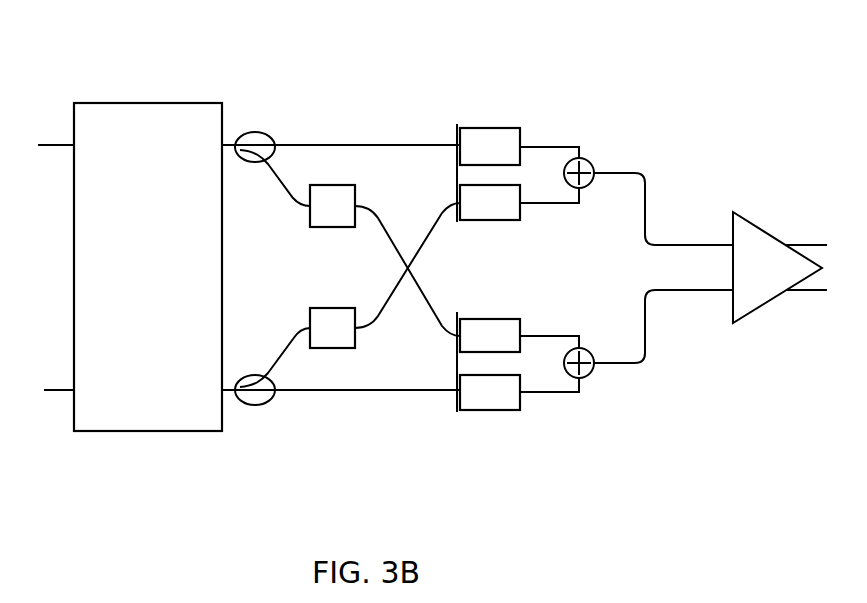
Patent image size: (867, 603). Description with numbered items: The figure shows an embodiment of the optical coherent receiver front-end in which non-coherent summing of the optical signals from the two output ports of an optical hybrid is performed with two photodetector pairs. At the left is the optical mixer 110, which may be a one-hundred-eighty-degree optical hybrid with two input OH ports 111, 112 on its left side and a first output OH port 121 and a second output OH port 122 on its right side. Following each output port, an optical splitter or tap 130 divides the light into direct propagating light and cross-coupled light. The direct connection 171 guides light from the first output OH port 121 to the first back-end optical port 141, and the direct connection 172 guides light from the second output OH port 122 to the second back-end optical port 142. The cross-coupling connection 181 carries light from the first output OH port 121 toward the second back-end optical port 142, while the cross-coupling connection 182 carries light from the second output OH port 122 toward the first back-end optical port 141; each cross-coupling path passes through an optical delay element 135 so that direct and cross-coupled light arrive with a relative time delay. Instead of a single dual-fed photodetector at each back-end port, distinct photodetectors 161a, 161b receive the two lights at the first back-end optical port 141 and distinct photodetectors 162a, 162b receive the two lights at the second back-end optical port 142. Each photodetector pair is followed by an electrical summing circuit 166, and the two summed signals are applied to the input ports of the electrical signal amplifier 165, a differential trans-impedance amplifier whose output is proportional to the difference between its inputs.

The optical mixer 110 is at (140, 103).
The input OH port 111 is at (66, 150).
The input OH port 112 is at (74, 385).
The first output OH port 121 is at (227, 145).
The second output OH port 122 is at (227, 395).
The optical path / waveguide 130 is at (270, 138).
The delay element 135 is at (332, 185).
The first back-end optical port 141 is at (457, 172).
The second back-end optical port 142 is at (457, 400).
The photodetector 161a is at (483, 128).
The photodetector 161b is at (490, 222).
The photodetector 162a is at (490, 318).
The photodetector 162b is at (497, 412).
The electrical signal amplifier 165 is at (768, 235).
The electrical summing circuit 166 is at (590, 162).
The direct connection 171 is at (408, 147).
The direct connection 172 is at (400, 388).
The cross-coupling connection 181 is at (302, 204).
The cross-coupling connection 182 is at (393, 283).